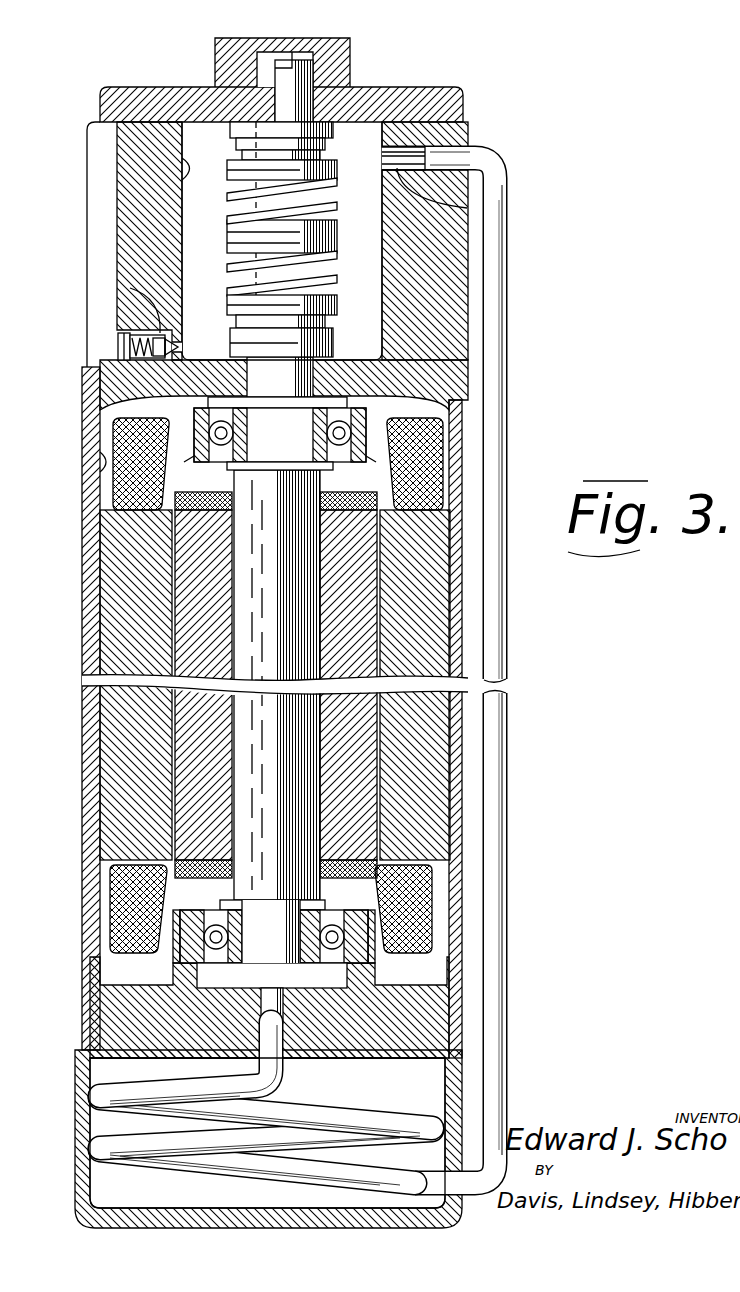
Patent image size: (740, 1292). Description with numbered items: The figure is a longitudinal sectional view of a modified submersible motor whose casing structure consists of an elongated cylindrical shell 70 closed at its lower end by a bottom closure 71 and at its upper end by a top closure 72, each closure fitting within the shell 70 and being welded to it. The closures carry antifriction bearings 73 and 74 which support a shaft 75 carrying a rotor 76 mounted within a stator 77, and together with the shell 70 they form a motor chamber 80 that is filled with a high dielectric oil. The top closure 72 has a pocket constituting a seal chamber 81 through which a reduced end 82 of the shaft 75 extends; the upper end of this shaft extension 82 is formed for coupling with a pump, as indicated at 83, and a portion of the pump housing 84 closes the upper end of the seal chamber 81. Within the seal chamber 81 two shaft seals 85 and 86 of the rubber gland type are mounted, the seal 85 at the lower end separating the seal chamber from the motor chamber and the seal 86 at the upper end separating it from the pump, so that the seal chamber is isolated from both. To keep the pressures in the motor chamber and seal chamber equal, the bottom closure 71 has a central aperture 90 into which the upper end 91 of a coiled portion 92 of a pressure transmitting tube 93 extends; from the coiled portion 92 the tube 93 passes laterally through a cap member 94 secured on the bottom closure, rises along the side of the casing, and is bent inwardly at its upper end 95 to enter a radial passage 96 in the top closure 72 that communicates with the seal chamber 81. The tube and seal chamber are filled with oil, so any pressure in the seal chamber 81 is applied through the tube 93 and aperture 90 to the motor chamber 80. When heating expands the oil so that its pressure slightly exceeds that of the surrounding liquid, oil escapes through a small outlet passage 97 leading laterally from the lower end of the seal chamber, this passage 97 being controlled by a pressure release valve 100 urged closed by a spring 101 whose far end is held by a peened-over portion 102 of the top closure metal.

The cylindrical casing or shell 70 is at (84, 514).
The bottom closure 71 is at (105, 1002).
The top closure 72 is at (138, 208).
The antifriction bearing 73 is at (242, 937).
The antifriction bearing 74 is at (243, 435).
The shaft 75 is at (253, 623).
The rotor 76 is at (197, 603).
The stator 77 is at (98, 577).
The motor chamber 80 is at (103, 458).
The seal chamber 81 is at (185, 165).
The reduced end of the shaft 82 is at (330, 195).
The pump coupling 83 is at (291, 58).
The pump housing 84 is at (343, 70).
The shaft seal 85 is at (340, 312).
The shaft seal 86 is at (340, 176).
The central aperture 90 is at (280, 1002).
The upper end of coiled portion 91 is at (280, 1045).
The coiled portion 92 is at (354, 1133).
The pressure transmitting tube 93 is at (493, 771).
The cap member 94 is at (88, 1115).
The inwardly bent upper end 95 is at (473, 130).
The radial passage 96 is at (467, 211).
The outlet passage 97 is at (181, 347).
The pressure release valve 100 is at (133, 290).
The spring 101 is at (120, 305).
The peened-over portion 102 is at (120, 334).